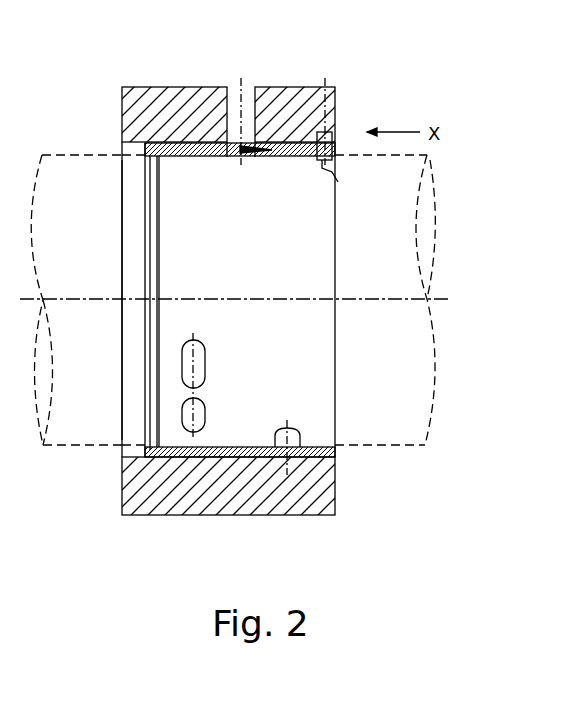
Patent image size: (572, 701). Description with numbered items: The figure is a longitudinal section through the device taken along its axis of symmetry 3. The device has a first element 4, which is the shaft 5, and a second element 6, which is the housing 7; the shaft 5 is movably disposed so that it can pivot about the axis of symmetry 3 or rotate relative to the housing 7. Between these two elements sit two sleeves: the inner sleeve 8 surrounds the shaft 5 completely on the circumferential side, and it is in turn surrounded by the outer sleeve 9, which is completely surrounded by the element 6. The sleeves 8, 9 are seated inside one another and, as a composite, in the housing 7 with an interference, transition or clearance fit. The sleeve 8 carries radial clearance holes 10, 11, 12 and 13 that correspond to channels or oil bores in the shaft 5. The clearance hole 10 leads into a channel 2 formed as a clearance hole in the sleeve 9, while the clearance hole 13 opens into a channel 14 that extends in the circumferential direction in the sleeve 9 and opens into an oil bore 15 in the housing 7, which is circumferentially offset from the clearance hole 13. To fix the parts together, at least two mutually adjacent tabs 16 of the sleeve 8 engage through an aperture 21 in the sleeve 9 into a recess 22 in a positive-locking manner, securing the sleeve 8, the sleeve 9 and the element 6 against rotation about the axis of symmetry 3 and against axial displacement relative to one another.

The channel 2 is at (283, 505).
The axis of symmetry 3 is at (437, 292).
The element 4 is at (420, 402).
The shaft 5 is at (420, 372).
The element 6 is at (210, 504).
The housing 7 is at (156, 506).
The sleeve 8 is at (167, 233).
The sleeve 9 is at (122, 452).
The radial clearance hole 10 is at (286, 426).
The radial clearance hole 11 is at (200, 418).
The radial clearance hole 12 is at (200, 368).
The radial clearance hole 13 is at (237, 158).
The channel 14 is at (258, 157).
The oil bore 15 is at (232, 87).
The tab 16 is at (333, 135).
The aperture 21 is at (338, 182).
The recess 22 is at (300, 87).